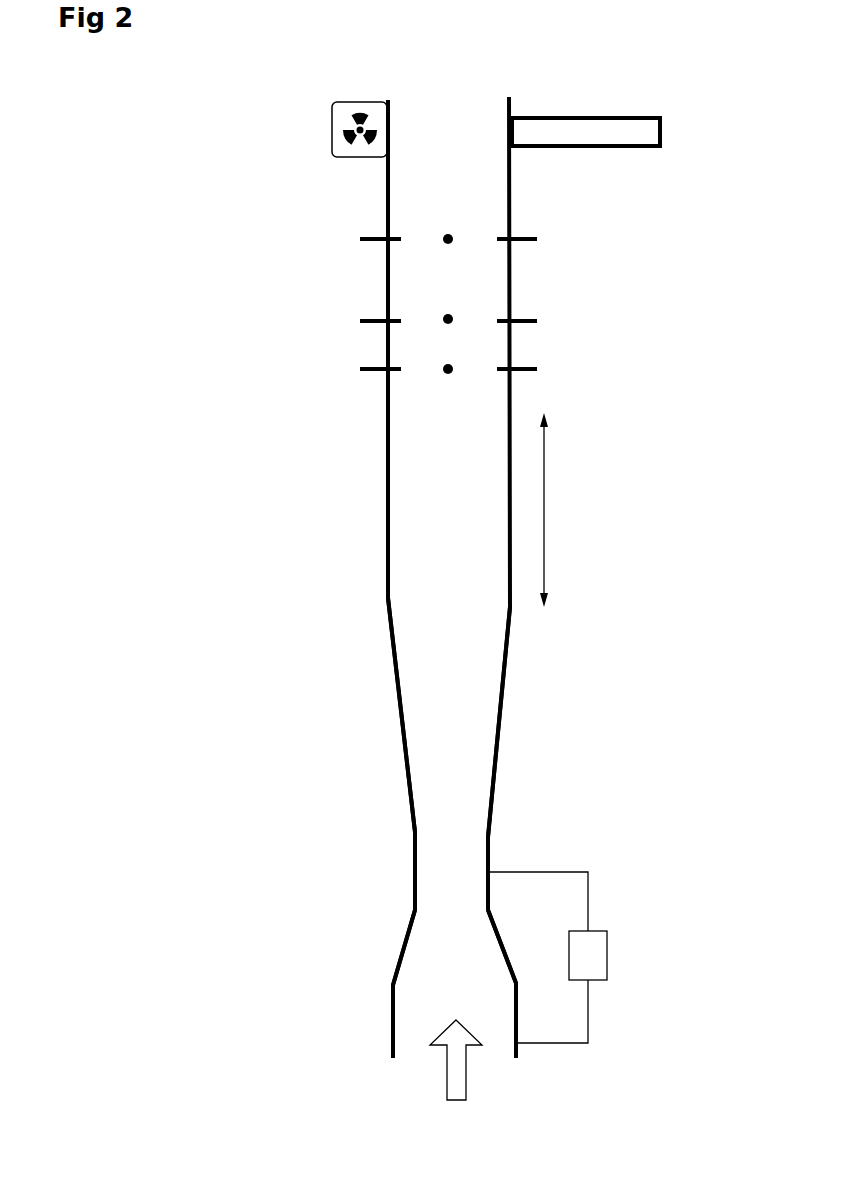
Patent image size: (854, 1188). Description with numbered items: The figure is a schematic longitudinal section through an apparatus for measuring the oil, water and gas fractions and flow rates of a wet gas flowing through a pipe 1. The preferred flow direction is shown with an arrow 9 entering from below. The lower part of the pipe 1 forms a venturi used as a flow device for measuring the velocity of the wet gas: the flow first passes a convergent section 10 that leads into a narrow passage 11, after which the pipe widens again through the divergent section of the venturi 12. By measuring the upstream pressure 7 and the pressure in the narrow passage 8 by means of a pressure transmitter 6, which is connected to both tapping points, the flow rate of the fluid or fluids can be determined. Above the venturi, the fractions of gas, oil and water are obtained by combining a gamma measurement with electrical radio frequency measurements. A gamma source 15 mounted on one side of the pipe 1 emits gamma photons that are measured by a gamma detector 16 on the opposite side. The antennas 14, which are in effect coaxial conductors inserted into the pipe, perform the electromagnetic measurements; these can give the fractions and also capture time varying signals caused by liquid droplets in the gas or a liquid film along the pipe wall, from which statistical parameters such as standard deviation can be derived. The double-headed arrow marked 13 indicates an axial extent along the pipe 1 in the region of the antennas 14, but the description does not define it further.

The pipe 1 is at (388, 498).
The pressure transmitter 6 is at (583, 960).
The upstream pressure 7 is at (540, 1043).
The pressure in the narrow passage 8 is at (508, 872).
The arrow 9 is at (466, 1087).
The convergent section 10 is at (403, 948).
The narrow passage 11 is at (415, 873).
The divergent section of the venturi 12 is at (398, 700).
The measurement zone 13 is at (544, 488).
The antennas 14 is at (401, 240).
The gamma source 15 is at (332, 140).
The gamma detector 16 is at (586, 148).